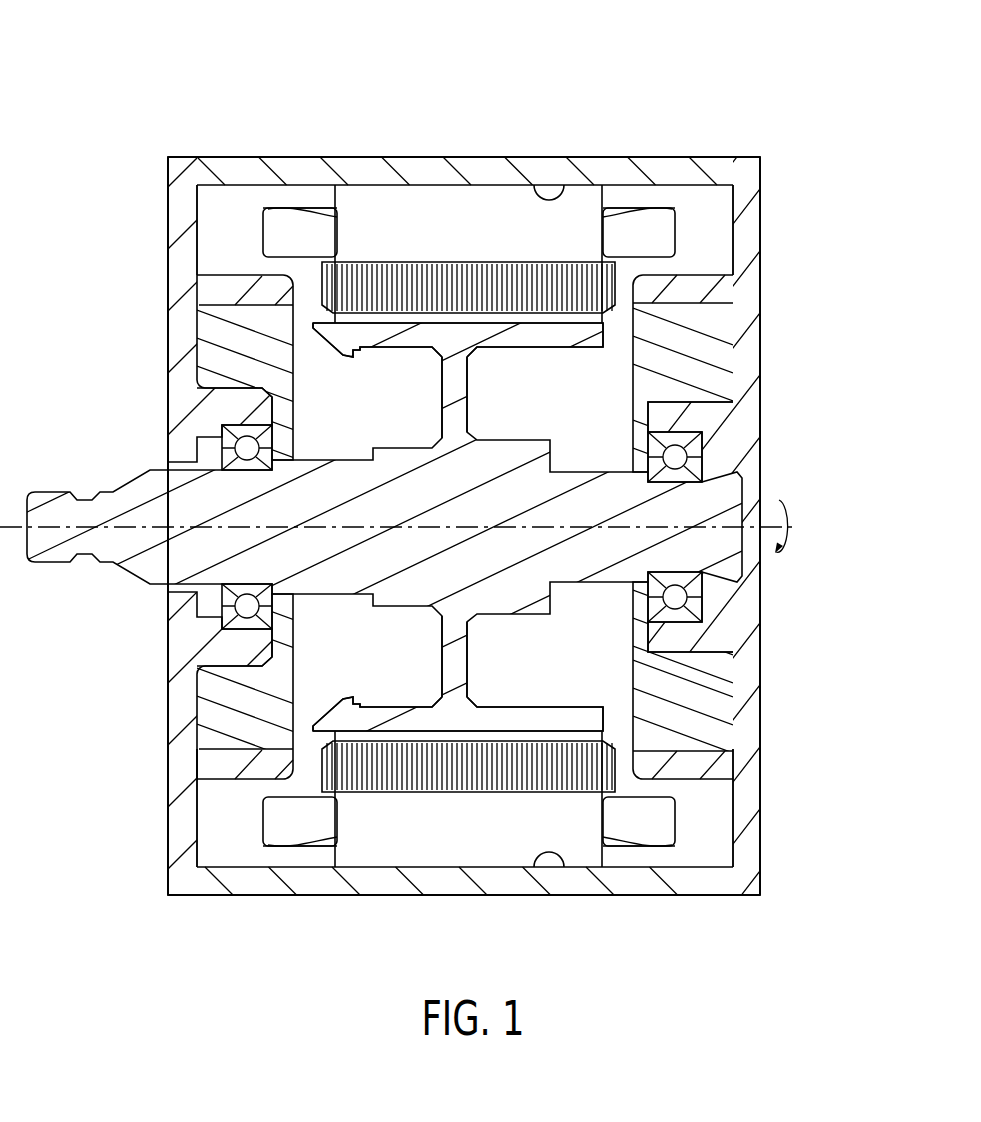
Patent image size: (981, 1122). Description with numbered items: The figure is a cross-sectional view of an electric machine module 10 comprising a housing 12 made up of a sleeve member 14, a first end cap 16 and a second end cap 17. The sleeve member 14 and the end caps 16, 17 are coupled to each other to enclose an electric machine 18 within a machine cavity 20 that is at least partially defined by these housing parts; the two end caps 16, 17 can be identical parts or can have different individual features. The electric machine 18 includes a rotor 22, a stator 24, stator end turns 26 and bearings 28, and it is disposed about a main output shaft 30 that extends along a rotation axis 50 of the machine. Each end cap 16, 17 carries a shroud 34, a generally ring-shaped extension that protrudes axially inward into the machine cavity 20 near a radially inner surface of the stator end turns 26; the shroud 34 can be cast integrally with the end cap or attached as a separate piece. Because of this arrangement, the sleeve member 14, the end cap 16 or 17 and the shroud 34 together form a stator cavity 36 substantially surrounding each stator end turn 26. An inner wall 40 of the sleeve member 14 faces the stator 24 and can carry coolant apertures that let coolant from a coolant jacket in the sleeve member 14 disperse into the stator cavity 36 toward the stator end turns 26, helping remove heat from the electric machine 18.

The electric machine module 10 is at (180, 55).
The housing 12 is at (647, 152).
The sleeve member 14 is at (423, 162).
The first end cap 16 is at (182, 273).
The second end cap 17 is at (744, 237).
The electric machine 18 is at (313, 212).
The machine cavity 20 is at (586, 372).
The rotor 22 is at (512, 268).
The stator 24 is at (370, 210).
The stator end turns 26 is at (277, 208).
The bearings 28 is at (247, 447).
The main output shaft 30 is at (130, 497).
The shroud 34 is at (693, 287).
The stator cavity 36 is at (247, 227).
The inner wall 40 is at (556, 196).
The rotation axis 50 is at (797, 525).